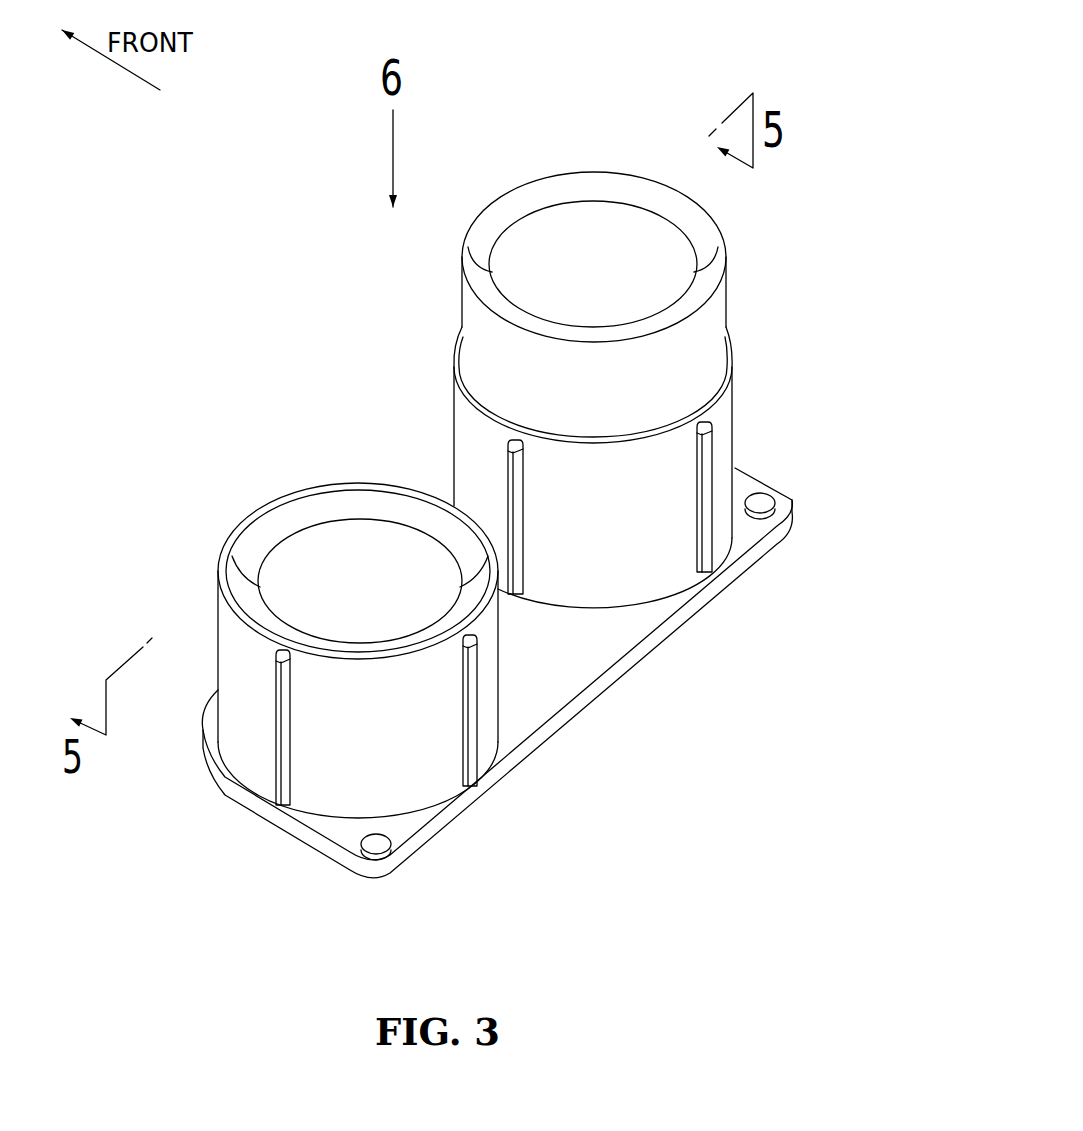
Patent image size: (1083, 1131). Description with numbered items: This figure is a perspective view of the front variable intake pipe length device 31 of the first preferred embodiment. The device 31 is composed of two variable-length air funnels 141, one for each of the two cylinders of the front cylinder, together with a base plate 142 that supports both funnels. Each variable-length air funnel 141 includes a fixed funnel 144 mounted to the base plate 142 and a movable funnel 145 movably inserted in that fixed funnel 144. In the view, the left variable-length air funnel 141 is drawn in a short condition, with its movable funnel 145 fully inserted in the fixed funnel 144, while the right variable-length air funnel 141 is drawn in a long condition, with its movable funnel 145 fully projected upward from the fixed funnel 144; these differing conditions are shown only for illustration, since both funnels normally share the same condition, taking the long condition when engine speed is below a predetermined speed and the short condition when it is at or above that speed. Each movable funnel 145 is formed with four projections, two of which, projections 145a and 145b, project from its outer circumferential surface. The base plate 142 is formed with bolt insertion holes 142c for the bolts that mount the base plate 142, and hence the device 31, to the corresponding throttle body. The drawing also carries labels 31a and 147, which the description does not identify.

The variable intake pipe length device 31 is at (248, 323).
The insertion hole 31a is at (644, 249).
The variable-length air funnel 141 is at (440, 357).
The base plate 142 is at (583, 670).
The bolt insertion hole 142c is at (765, 503).
The fixed funnel 144 is at (661, 553).
The movable funnel 145 is at (583, 160).
The projection 145a is at (712, 432).
The projection 145b is at (512, 455).
The holding portion 147 is at (657, 130).